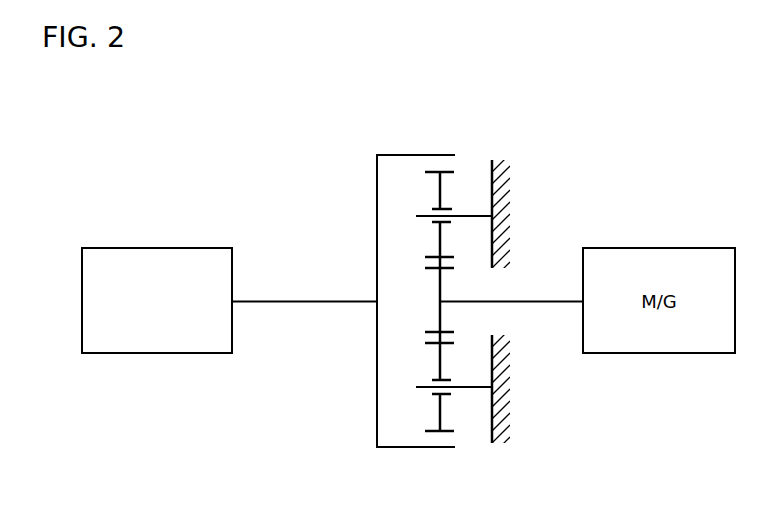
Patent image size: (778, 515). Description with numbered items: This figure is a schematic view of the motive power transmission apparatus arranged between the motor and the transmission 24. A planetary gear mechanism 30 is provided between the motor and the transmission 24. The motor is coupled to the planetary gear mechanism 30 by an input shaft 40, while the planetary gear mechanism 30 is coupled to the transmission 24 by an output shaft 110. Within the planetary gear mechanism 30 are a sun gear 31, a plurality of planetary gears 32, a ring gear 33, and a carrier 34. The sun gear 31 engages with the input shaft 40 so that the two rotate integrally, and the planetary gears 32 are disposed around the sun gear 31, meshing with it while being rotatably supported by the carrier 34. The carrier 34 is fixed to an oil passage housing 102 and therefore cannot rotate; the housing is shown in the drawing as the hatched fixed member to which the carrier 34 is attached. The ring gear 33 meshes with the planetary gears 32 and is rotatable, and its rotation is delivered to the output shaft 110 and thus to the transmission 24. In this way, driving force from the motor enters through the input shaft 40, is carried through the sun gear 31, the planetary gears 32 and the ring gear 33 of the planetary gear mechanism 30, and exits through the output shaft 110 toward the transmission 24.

The transmission 24 is at (106, 248).
The output shaft 110 is at (290, 303).
The planetary gear mechanism 30 is at (431, 110).
The ring gear 33 is at (398, 153).
The planetary gears 32 is at (438, 192).
The sun gear 31 is at (438, 292).
The carrier 34 is at (475, 212).
The oil passage housing 102 is at (492, 163).
The input shaft 40 is at (540, 303).